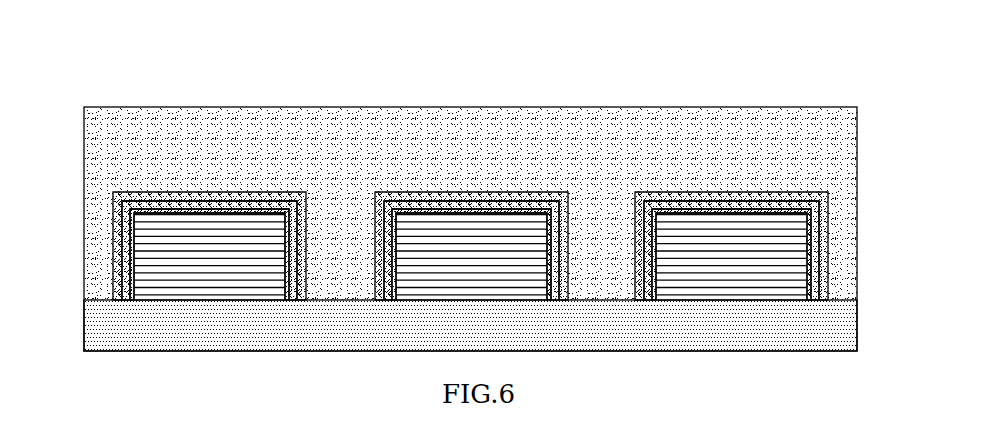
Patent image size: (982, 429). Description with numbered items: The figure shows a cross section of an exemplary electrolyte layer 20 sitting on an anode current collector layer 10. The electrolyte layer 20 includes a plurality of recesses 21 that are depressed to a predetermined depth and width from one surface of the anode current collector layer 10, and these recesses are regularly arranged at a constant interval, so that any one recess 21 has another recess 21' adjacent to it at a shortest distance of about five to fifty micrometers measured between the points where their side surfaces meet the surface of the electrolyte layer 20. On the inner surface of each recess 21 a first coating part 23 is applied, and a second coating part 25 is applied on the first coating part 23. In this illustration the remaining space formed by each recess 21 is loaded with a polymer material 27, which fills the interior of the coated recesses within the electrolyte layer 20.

The anode current collector layer 10 is at (857, 325).
The electrolyte layer 20 is at (575, 107).
The recess 21 is at (209, 182).
The adjacent recess 21' is at (471, 182).
The first coating part 23 is at (217, 201).
The second coating part 25 is at (268, 209).
The polymer material 27 is at (150, 253).